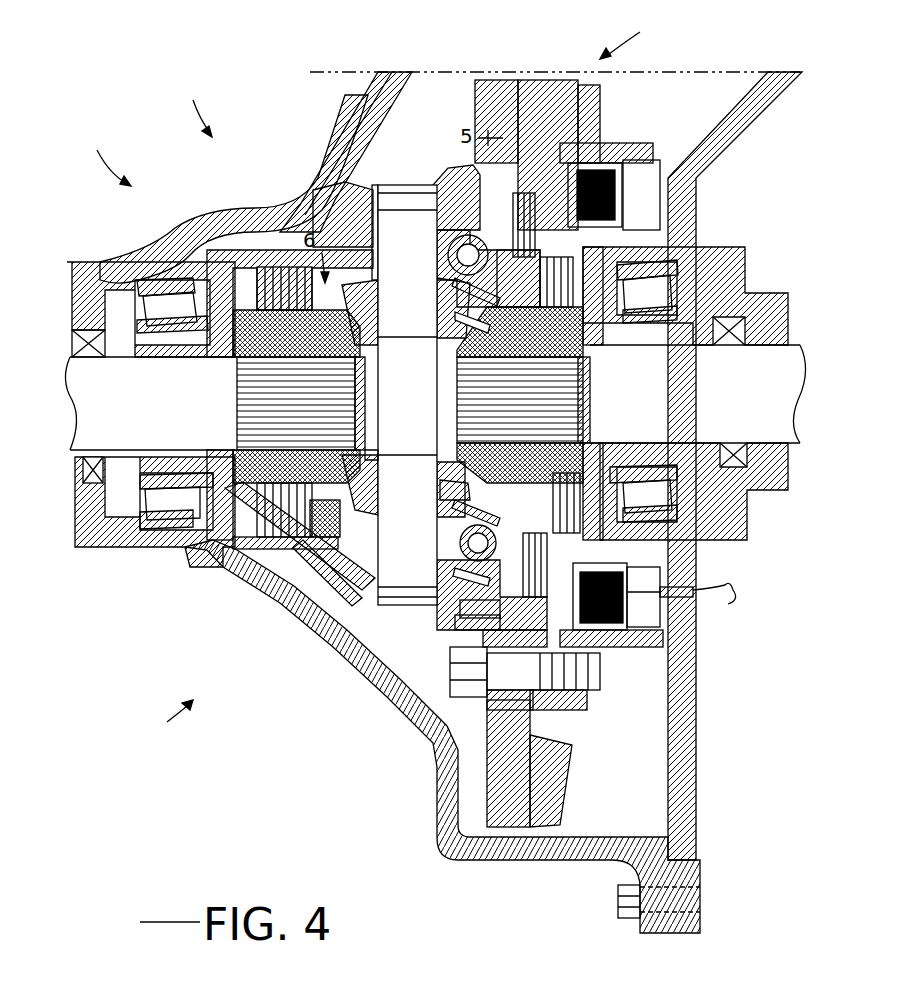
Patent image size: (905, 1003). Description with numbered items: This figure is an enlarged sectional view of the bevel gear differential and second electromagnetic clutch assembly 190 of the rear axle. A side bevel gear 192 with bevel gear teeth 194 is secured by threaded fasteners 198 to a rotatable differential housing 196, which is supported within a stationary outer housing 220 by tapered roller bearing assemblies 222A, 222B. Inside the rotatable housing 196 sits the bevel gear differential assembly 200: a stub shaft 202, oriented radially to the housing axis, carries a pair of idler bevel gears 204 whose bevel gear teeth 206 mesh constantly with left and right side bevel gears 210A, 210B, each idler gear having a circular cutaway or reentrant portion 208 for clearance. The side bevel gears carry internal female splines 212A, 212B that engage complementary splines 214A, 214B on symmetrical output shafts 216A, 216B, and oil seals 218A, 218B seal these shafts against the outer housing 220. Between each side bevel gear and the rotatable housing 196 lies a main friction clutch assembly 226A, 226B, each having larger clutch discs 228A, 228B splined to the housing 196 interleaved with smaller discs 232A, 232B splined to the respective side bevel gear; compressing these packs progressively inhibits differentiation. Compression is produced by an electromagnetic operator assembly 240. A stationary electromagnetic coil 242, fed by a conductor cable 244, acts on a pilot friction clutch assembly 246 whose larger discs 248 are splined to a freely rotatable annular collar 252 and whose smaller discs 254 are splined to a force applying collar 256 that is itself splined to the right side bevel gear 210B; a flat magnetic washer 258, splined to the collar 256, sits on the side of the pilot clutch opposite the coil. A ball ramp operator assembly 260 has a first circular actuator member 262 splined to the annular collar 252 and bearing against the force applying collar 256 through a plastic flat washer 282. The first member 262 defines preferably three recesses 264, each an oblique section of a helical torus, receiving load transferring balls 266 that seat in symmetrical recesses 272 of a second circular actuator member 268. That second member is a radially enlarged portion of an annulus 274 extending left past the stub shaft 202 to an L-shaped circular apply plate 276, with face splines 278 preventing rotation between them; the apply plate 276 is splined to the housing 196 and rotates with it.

The bevel gear differential and second electromagnetic clutch assembly 190 is at (105, 157).
The side bevel gear 192 is at (523, 733).
The bevel gear teeth 194 is at (550, 787).
The rotatable differential housing 196 is at (343, 633).
The threaded fastener 198 is at (595, 670).
The bevel gear differential assembly 200 is at (160, 717).
The stub shaft 202 is at (422, 395).
The idler bevel gear 204 is at (367, 587).
The bevel gear teeth 206 is at (385, 450).
The circular cutaway or reentrant portion 208 is at (335, 572).
The left side bevel gear 210A is at (233, 357).
The right side bevel gear 210B is at (500, 340).
The internal female splines or gear teeth 212A is at (268, 453).
The internal female splines or gear teeth 212B is at (498, 446).
The splines 214A is at (358, 368).
The splines 214B is at (575, 424).
The output shaft 216A is at (108, 463).
The output shaft 216B is at (805, 447).
The oil seal 218A is at (115, 312).
The oil seal 218B is at (735, 350).
The outer housing 220 is at (437, 757).
The tapered roller bearing assembly 222A is at (175, 298).
The tapered roller bearing assembly 222B is at (657, 293).
The left secondary or main friction clutch assembly 226A is at (234, 180).
The right secondary or main friction clutch assembly 226B is at (613, 227).
The larger clutch plates or discs 228A is at (265, 290).
The larger friction clutch plates or discs 228B is at (580, 140).
The smaller friction clutch plates or discs 232A is at (285, 315).
The smaller friction clutch plates or discs 232B is at (588, 364).
The electromagnetic operator assembly 240 is at (622, 33).
The electromagnetic coil 242 is at (663, 570).
The conductor cable 244 is at (727, 588).
The primary or pilot friction clutch assembly 246 is at (573, 103).
The larger clutch plates or discs 248 is at (550, 95).
The annular collar 252 is at (462, 163).
The smaller clutch plates or discs 254 is at (455, 279).
The force applying collar 256 is at (455, 316).
The magnetic washer 258 is at (497, 80).
The ball ramp operator assembly 260 is at (460, 667).
The first circular actuator member 262 is at (480, 617).
The recess 264 is at (483, 512).
The load transferring ball 266 is at (465, 572).
The second circular actuator member 268 is at (460, 543).
The symmetrical recess 272 is at (455, 242).
The annulus 274 is at (380, 190).
The L-shaped circular apply plate 276 is at (317, 217).
The face splines 278 is at (352, 160).
The flat washer 282 is at (460, 495).